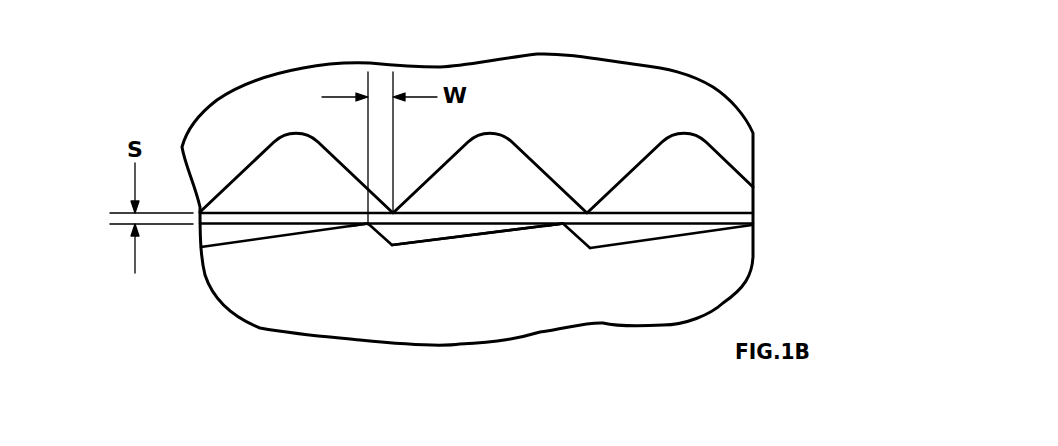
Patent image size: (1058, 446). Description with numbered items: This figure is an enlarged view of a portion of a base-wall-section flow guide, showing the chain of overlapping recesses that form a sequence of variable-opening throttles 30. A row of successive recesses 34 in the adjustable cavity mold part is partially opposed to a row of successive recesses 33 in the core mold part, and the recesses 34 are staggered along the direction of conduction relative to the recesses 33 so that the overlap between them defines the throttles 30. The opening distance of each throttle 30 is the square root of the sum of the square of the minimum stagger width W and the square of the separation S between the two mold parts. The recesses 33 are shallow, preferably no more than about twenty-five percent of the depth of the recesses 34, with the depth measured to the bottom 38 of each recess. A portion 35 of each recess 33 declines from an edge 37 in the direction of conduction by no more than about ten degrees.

The variable-opening throttle 30 is at (383, 211).
The successive recess in the core mold part 33 is at (225, 241).
The successive recess in the adjustable cavity mold part 34 is at (283, 157).
The declining portion of recess 35 is at (453, 240).
The edge of recess 37 is at (368, 224).
The bottom of recess 38 is at (393, 245).